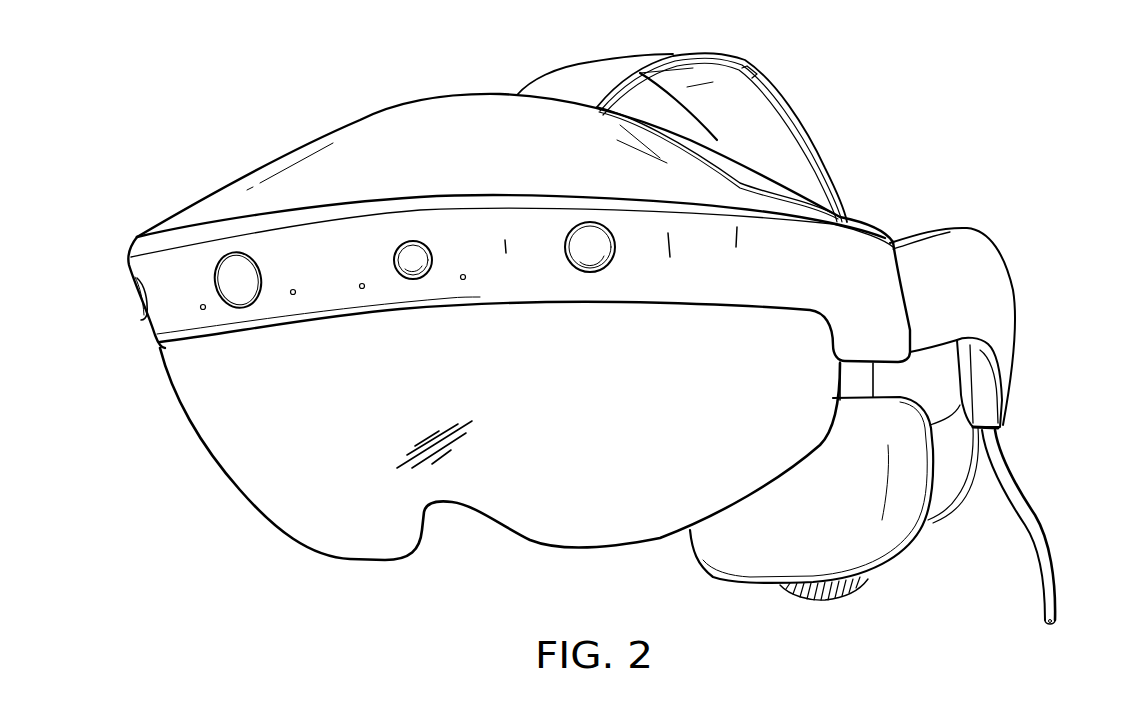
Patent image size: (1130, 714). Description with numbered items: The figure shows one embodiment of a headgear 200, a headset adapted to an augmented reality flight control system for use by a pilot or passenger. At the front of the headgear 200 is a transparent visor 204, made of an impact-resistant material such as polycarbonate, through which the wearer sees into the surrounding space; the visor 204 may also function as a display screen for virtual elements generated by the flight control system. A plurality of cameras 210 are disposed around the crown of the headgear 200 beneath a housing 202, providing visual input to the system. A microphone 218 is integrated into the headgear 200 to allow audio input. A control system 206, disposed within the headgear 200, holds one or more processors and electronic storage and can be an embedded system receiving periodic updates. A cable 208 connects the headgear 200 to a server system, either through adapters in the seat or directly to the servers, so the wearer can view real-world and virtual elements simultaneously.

The headgear 200 is at (890, 68).
The housing 202 is at (338, 131).
The visor 204 is at (236, 490).
The control system 206 is at (889, 578).
The cable 208 is at (1058, 582).
The cameras 210 is at (134, 300).
The microphone 218 is at (296, 291).